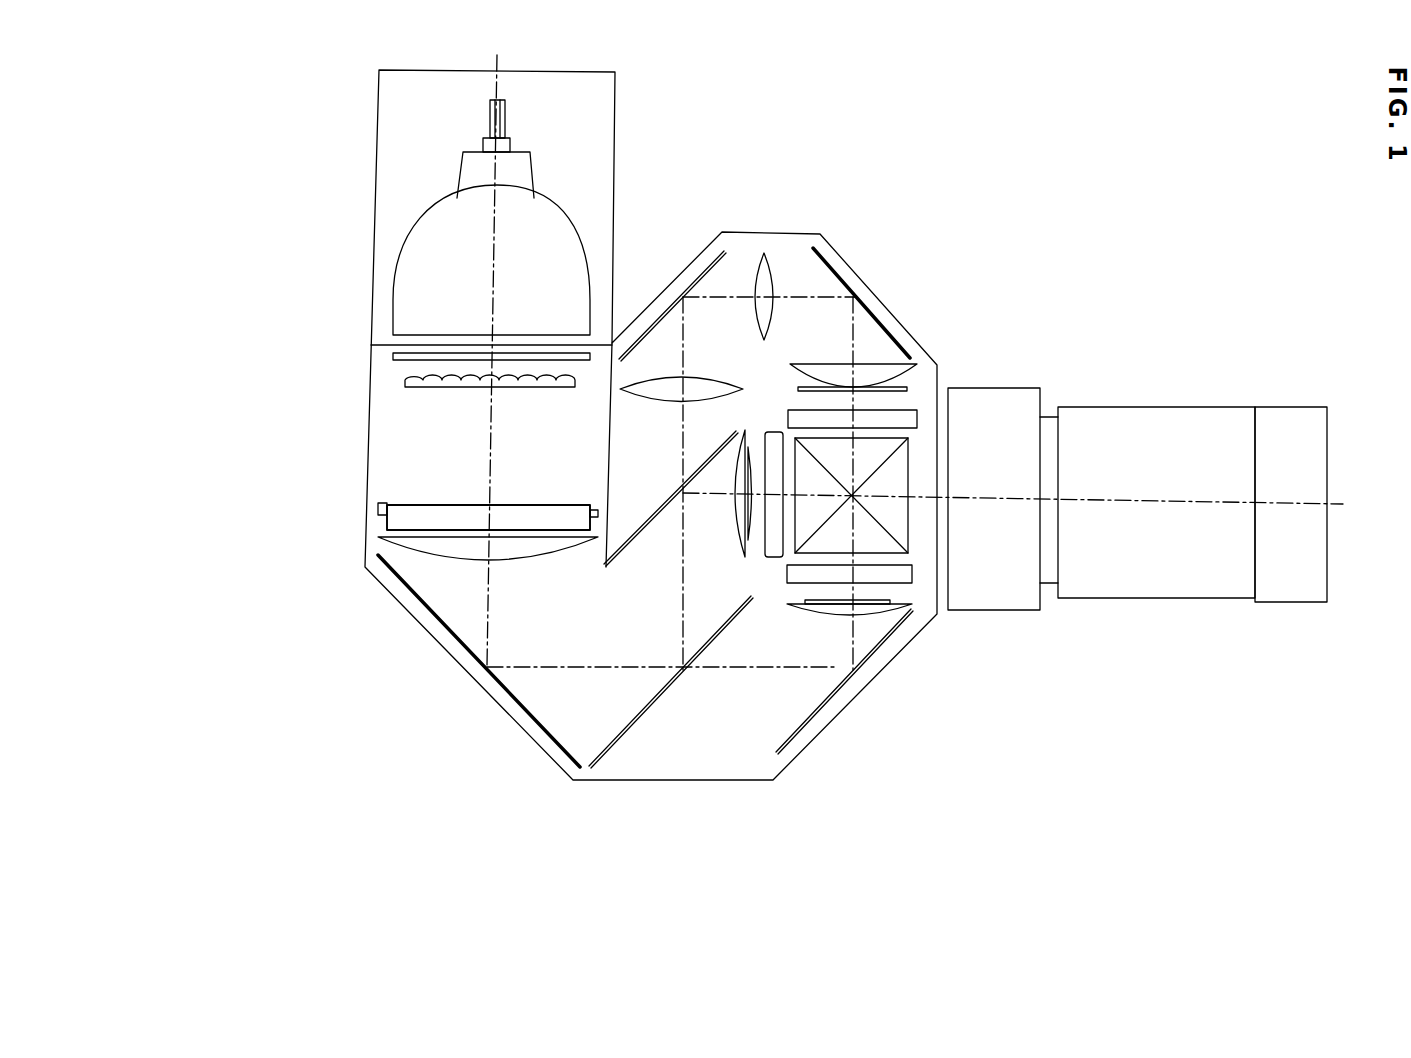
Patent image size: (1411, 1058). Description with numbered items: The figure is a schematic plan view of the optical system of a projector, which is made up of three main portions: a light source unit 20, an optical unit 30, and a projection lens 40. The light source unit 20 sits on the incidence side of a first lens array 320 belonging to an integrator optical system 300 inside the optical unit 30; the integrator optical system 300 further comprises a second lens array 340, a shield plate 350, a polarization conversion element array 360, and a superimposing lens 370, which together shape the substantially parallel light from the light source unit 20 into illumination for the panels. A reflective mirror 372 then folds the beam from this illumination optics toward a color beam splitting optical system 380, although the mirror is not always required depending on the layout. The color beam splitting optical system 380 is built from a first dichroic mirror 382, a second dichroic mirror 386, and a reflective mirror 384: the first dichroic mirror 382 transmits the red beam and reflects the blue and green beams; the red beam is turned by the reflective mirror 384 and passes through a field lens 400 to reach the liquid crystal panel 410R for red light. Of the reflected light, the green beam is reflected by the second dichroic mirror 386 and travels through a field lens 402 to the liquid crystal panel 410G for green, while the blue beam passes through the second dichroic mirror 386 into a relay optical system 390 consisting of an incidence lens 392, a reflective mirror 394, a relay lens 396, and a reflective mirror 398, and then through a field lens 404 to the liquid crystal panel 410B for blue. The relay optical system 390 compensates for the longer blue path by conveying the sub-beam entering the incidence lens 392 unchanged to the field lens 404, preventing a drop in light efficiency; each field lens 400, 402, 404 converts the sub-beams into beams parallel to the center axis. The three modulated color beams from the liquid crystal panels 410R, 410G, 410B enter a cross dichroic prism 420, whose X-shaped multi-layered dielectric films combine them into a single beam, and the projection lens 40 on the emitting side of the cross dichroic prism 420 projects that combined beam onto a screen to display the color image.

The light source unit 20 is at (365, 235).
The optical unit 30 is at (450, 700).
The projection lens 40 is at (1148, 400).
The integrator optical system 300 is at (335, 438).
The first lens array 320 is at (400, 380).
The second lens array 340 is at (378, 505).
The shield plate 350 is at (488, 517).
The polarization conversion element array 360 is at (488, 517).
The superimposing lens 370 is at (372, 545).
The reflective mirror 372 is at (408, 588).
The color beam splitting optical system 380 is at (631, 651).
The first dichroic mirror 382 is at (668, 685).
The reflective mirror 384 is at (790, 727).
The second dichroic mirror 386 is at (640, 533).
The relay optical system 390 is at (760, 242).
The incidence lens 392 is at (637, 405).
The reflective mirror 394 is at (663, 318).
The relay lens 396 is at (775, 302).
The reflective mirror 398 is at (853, 283).
The field lens 400 is at (798, 612).
The field lens 402 is at (738, 505).
The field lens 404 is at (840, 364).
The liquid crystal panel 410R is at (787, 578).
The liquid crystal panel 410G is at (770, 432).
The liquid crystal panel 410B is at (797, 410).
The cross dichroic prism 420 is at (912, 533).